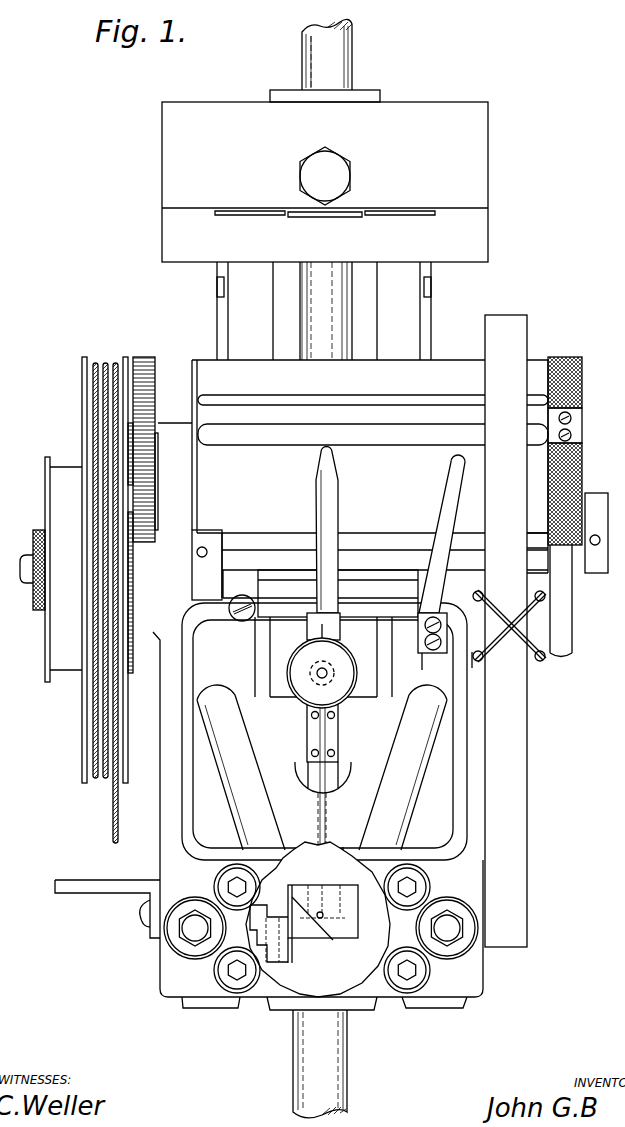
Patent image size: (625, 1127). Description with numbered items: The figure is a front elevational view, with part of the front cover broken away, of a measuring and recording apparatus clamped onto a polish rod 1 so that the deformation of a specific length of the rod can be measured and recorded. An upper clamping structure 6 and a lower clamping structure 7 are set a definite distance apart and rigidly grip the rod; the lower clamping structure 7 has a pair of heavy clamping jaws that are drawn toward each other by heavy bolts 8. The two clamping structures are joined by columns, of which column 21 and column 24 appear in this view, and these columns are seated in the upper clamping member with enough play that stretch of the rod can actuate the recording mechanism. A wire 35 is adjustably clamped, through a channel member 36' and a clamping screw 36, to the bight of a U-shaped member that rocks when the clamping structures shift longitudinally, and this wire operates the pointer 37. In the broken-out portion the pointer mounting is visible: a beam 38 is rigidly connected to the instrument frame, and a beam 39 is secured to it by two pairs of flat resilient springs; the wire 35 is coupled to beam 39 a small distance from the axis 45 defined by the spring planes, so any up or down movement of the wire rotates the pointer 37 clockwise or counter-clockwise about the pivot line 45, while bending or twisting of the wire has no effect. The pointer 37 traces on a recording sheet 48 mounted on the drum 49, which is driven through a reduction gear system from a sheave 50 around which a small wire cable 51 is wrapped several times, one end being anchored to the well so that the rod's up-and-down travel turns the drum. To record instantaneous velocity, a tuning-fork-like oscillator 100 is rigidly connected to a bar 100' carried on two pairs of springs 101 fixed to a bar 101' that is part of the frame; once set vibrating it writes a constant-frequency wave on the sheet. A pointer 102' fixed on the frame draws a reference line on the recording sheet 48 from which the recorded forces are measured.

The polish rod 1 is at (352, 63).
The upper clamping structure 6 is at (488, 182).
The lower clamping structure 7 is at (470, 977).
The heavy bolts 8 is at (190, 930).
The column 21 is at (417, 323).
The column 24 is at (228, 318).
The wire 35 is at (322, 740).
The clamping screw 36 is at (327, 667).
The channel member 36' is at (307, 630).
The pointer 37 is at (334, 520).
The beam 38 is at (300, 960).
The beam 39 is at (334, 924).
The axis 45 is at (293, 920).
The recording sheet 48 is at (535, 375).
The drum 49 is at (192, 370).
The sheave 50 is at (82, 712).
The wire cable 51 is at (106, 363).
The oscillator 100 is at (383, 731).
The bar 100' is at (498, 678).
The springs 101 is at (547, 625).
The bar 101' is at (539, 637).
The pointer 102' is at (434, 562).